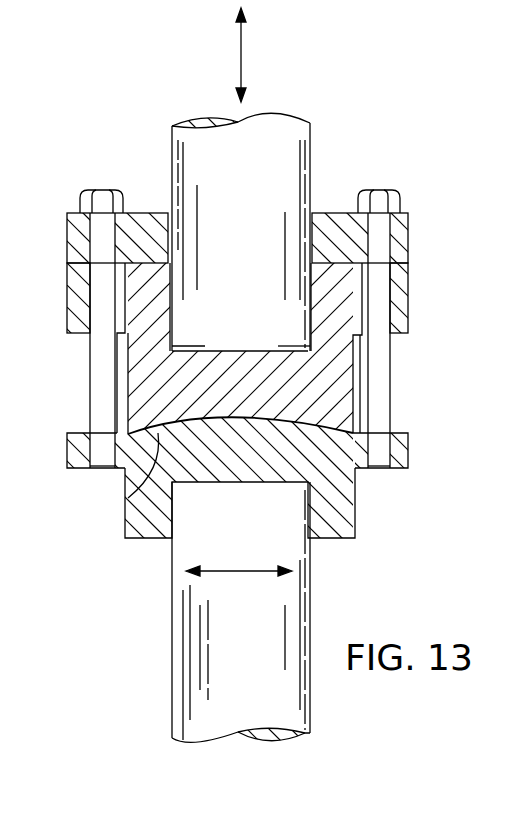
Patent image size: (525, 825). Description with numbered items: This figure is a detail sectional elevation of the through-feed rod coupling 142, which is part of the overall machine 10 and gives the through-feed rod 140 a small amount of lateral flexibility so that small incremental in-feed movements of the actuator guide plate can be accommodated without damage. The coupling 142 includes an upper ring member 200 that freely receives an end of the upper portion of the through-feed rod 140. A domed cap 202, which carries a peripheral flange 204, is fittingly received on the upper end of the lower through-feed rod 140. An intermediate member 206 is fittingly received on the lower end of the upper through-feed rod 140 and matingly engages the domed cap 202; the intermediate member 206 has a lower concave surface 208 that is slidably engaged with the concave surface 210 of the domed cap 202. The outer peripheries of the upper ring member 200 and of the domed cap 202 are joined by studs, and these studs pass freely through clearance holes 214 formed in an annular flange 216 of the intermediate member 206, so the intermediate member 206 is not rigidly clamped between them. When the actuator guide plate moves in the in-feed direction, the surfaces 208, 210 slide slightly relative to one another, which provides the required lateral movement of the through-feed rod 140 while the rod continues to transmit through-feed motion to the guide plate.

The apparatus 10 is at (512, 78).
The through-feed rod 140 is at (283, 157).
The through-feed rod coupling 142 is at (422, 348).
The upper ring member 200 is at (400, 232).
The domed cap 202 is at (355, 513).
The peripheral flange 204 is at (412, 463).
The intermediate member 206 is at (327, 386).
The lower concave surface 208 is at (128, 498).
The concave surface 210 is at (293, 418).
The clearance holes 214 is at (383, 285).
The annular flange 216 is at (402, 313).